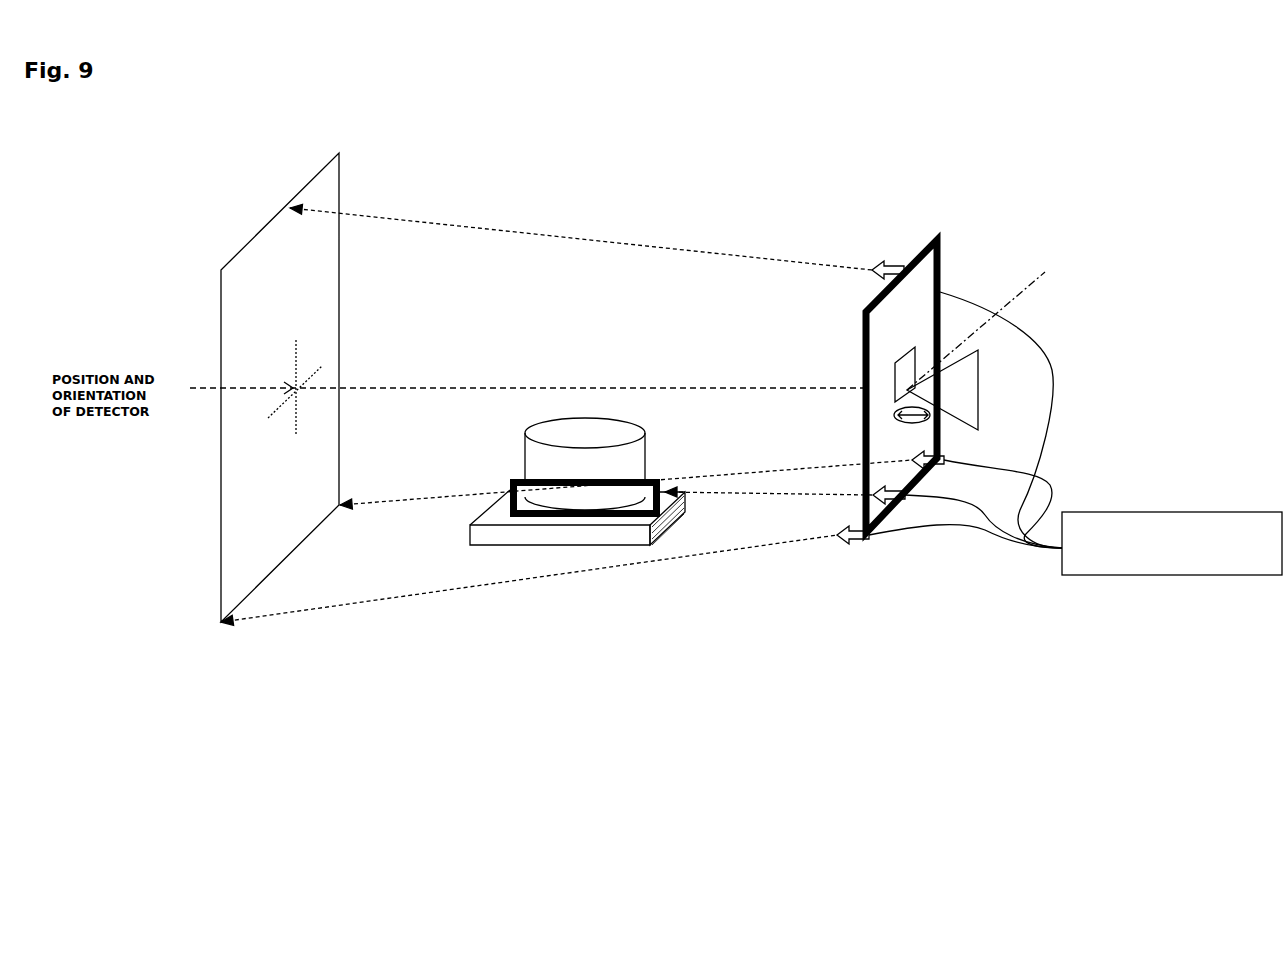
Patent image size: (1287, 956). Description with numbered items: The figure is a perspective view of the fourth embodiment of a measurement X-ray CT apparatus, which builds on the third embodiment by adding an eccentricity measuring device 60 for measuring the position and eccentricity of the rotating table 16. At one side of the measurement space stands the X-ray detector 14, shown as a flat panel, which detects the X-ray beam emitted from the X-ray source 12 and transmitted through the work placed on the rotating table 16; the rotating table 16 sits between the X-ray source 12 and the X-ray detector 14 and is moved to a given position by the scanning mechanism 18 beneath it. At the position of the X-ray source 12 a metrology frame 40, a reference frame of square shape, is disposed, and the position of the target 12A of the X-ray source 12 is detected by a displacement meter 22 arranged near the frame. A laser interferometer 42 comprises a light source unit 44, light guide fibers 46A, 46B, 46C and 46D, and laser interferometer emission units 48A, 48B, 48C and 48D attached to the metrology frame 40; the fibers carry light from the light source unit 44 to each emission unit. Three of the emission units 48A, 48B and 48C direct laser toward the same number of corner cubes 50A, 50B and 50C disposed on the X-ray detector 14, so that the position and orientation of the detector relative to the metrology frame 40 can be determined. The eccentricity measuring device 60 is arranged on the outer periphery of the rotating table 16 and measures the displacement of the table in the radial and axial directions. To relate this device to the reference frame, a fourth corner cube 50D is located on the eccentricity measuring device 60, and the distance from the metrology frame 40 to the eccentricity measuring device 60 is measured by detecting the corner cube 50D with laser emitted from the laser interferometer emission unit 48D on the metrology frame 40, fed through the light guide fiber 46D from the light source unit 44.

The X-ray detector 14 is at (221, 313).
The rotating table 16 is at (630, 430).
The scanning mechanism 18 is at (685, 512).
The eccentricity measuring device 60 is at (510, 490).
The corner cube 50A is at (290, 208).
The corner cube 50B is at (224, 625).
The corner cube 50C is at (344, 503).
The corner cube 50D is at (678, 486).
The metrology frame 40 is at (940, 240).
The laser interferometer emission unit 48A is at (892, 262).
The laser interferometer emission unit 48B is at (862, 542).
The laser interferometer emission unit 48C is at (945, 460).
The laser interferometer emission unit 48D is at (910, 493).
The X-ray source 12 is at (982, 385).
The target 12A is at (994, 321).
The displacement meter 22 is at (897, 410).
The laser interferometer 42 is at (1075, 451).
The light source unit 44 is at (1122, 512).
The light guide fiber 46A is at (1050, 372).
The light guide fiber 46B is at (960, 523).
The light guide fiber 46C is at (1042, 478).
The light guide fiber 46D is at (975, 520).